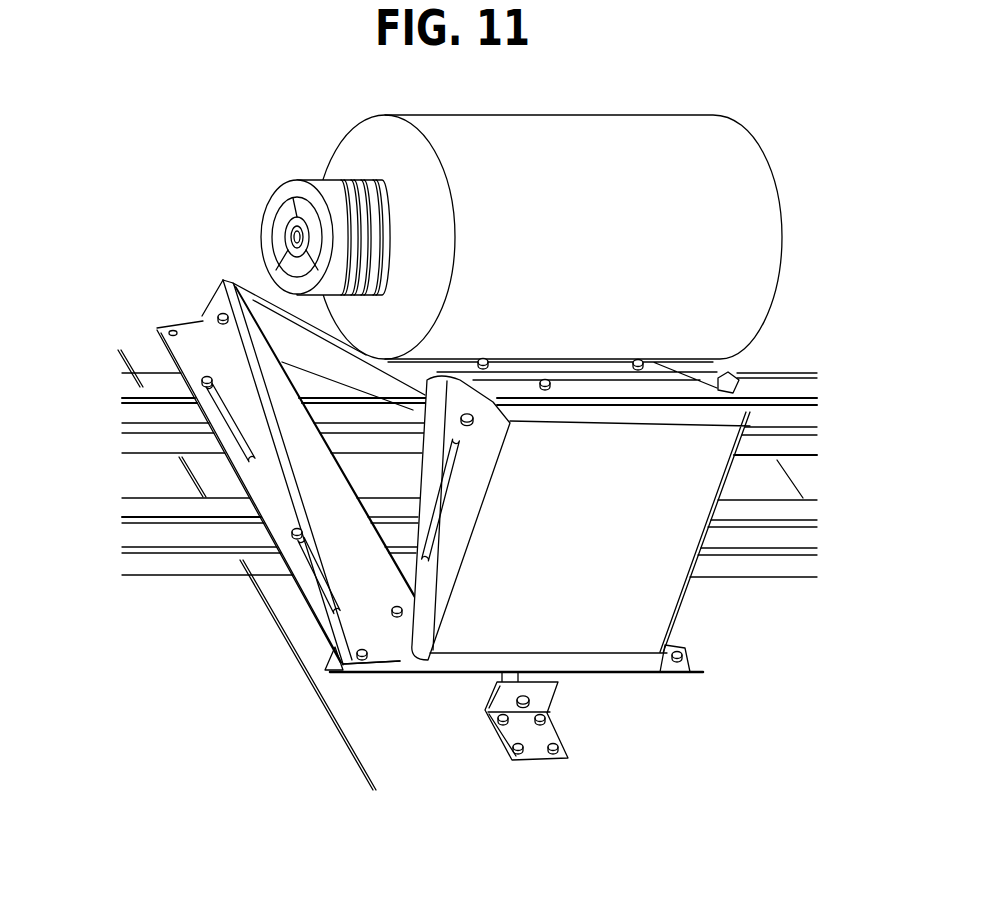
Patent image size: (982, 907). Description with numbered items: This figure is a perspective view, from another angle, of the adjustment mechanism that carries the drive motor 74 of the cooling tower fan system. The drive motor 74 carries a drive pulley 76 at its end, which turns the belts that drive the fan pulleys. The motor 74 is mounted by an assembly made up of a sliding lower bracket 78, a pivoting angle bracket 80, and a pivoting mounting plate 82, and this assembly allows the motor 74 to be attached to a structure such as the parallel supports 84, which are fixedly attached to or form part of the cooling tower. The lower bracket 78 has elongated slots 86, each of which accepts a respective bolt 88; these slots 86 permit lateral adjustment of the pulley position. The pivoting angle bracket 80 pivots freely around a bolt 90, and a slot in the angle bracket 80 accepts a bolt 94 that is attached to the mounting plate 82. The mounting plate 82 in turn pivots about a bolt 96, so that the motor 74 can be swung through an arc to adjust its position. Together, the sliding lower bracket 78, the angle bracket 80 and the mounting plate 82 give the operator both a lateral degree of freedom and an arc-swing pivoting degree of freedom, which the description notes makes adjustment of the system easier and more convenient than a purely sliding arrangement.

The drive motor 74 is at (760, 207).
The drive pulley 76 is at (302, 182).
The sliding lower bracket 78 is at (398, 640).
The pivoting angle bracket 80 is at (665, 610).
The pivoting mounting plate 82 is at (257, 298).
The parallel supports 84 is at (787, 570).
The elongated slots 86 is at (230, 437).
The bolt 88 is at (200, 377).
The bolt 90 is at (433, 610).
The bolt 94 is at (470, 430).
The bolt 96 is at (212, 307).